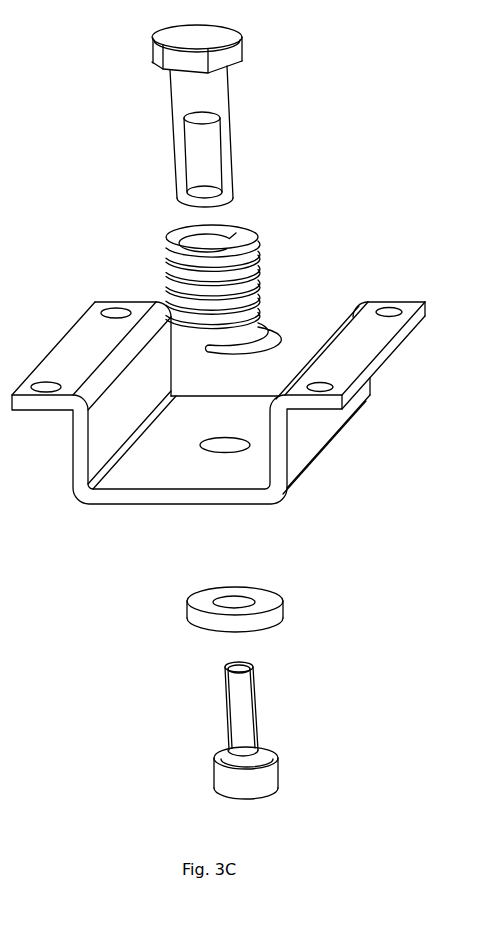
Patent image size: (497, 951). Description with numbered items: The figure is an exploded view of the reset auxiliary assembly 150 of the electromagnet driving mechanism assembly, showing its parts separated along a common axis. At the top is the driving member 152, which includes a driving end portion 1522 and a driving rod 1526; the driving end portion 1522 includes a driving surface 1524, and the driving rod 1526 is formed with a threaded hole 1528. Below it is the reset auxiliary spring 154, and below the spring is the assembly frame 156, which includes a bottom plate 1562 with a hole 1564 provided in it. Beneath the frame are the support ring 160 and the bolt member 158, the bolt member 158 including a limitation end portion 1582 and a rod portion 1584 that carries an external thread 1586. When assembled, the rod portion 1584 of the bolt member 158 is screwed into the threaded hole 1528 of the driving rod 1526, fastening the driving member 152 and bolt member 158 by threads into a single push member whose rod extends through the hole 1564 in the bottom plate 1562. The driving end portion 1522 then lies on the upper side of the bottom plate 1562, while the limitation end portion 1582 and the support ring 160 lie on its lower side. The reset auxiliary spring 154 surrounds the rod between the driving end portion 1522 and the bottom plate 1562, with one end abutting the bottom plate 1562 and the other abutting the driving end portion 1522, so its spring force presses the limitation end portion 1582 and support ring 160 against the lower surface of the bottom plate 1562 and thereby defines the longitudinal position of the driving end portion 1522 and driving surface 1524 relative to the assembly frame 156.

The reset auxiliary assembly 150 is at (310, 56).
The driving member 152 is at (217, 97).
The driving end portion 1522 is at (183, 61).
The driving surface 1524 is at (185, 36).
The driving rod 1526 is at (227, 148).
The threaded hole 1528 is at (200, 167).
The reset auxiliary spring 154 is at (235, 282).
The assembly frame 156 is at (305, 432).
The bottom plate 1562 is at (200, 487).
The hole 1564 is at (222, 446).
The support ring 160 is at (263, 600).
The bolt member 158 is at (265, 772).
The limitation end portion 1582 is at (237, 787).
The rod portion 1584 is at (242, 715).
The external thread 1586 is at (225, 713).